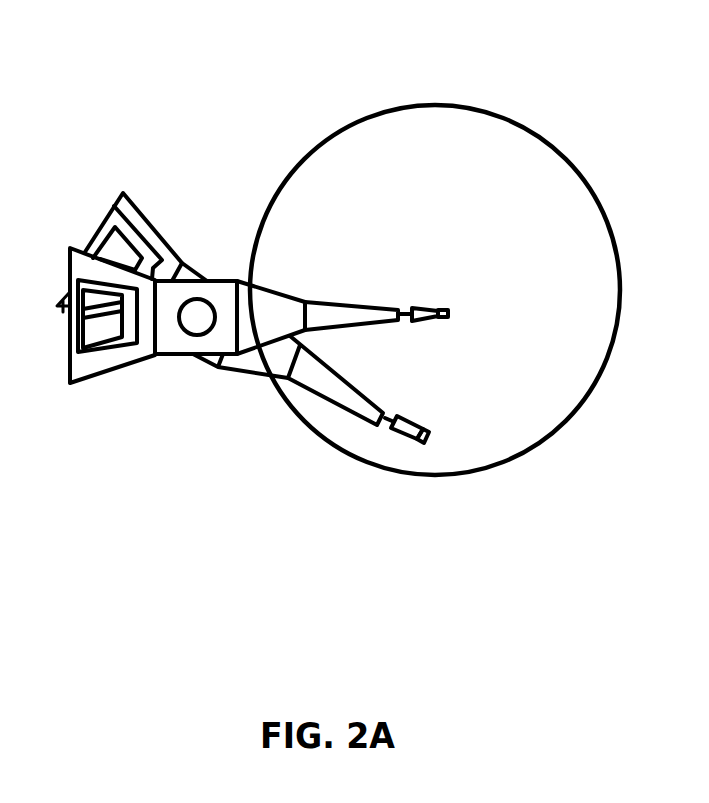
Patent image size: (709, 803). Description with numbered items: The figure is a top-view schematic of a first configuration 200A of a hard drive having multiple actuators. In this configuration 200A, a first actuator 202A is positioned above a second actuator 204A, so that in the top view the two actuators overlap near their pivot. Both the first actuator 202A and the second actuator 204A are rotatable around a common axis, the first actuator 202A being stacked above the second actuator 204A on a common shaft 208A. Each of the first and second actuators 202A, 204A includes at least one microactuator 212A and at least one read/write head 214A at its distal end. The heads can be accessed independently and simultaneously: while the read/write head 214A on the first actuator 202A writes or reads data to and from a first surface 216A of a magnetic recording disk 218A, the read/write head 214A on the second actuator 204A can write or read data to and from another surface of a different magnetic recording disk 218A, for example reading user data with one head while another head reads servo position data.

The first configuration 200A is at (205, 47).
The first actuator 202A is at (131, 366).
The second actuator 204A is at (142, 214).
The common shaft 208A is at (211, 303).
The microactuator 212A is at (402, 308).
The read/write head 214A is at (445, 309).
The first surface 216A is at (540, 206).
The magnetic recording disk 218A is at (492, 112).